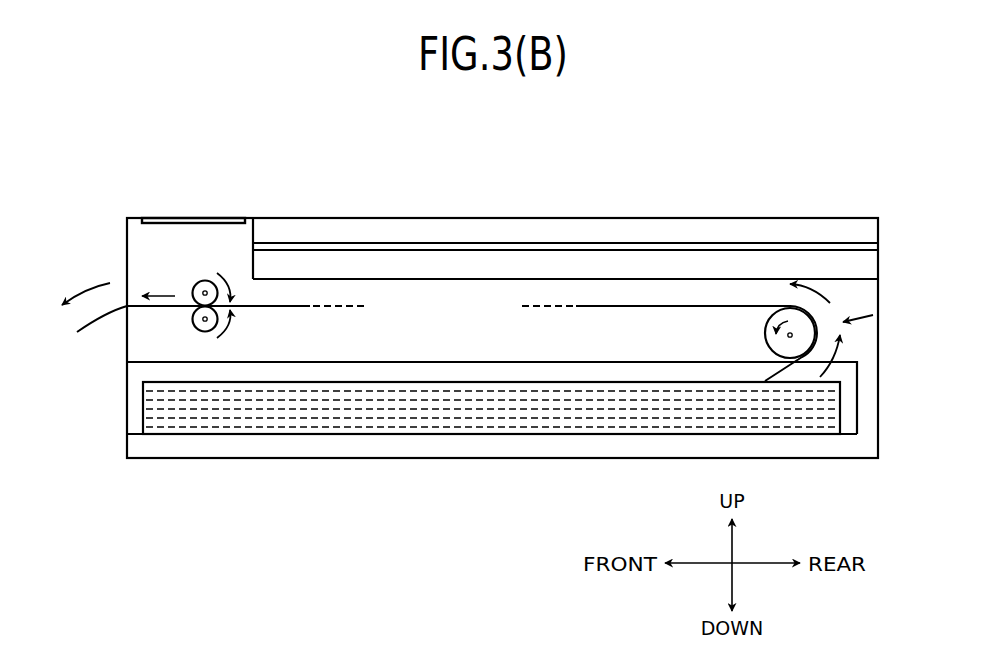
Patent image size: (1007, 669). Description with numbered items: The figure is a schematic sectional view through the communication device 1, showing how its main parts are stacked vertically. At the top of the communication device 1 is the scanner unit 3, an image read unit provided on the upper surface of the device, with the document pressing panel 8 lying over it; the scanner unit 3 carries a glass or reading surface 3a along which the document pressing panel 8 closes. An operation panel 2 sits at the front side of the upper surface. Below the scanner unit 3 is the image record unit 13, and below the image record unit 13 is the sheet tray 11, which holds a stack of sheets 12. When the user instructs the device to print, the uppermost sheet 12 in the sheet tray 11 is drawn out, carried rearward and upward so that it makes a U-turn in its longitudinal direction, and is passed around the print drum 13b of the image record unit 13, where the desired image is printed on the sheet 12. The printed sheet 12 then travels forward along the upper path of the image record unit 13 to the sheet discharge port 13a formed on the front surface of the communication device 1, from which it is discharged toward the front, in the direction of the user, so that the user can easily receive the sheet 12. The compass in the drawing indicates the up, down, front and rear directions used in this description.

The communication device 1 is at (672, 148).
The operation panel 2 is at (200, 220).
The scanner unit 3 is at (858, 268).
The platen glass 3a is at (823, 245).
The document pressing panel 8 is at (692, 225).
The sheet tray 11 is at (128, 380).
The sheet 12 is at (96, 320).
The image record unit 13 is at (873, 318).
The sheet discharge port 13a is at (128, 296).
The print drum 13b is at (765, 333).